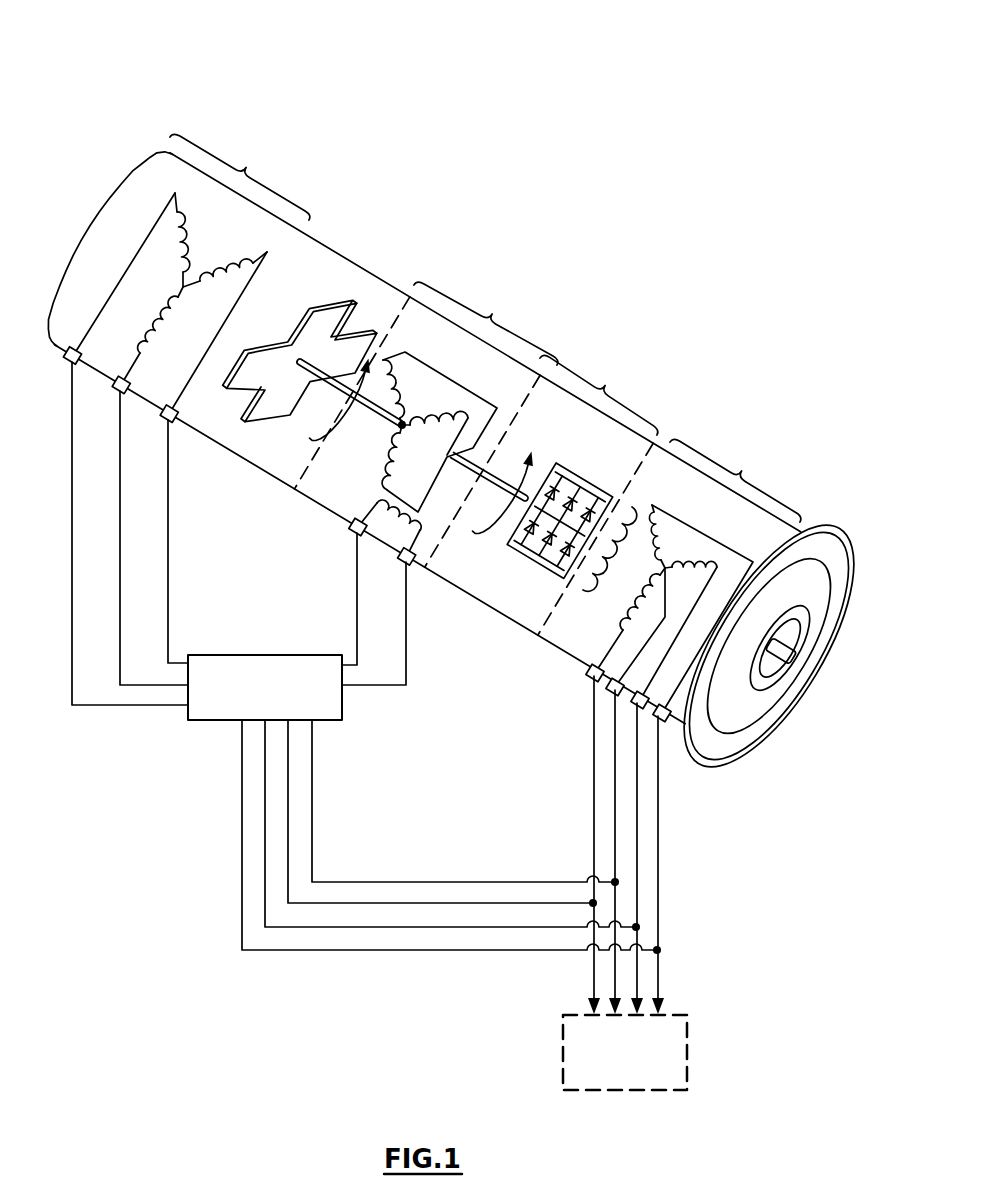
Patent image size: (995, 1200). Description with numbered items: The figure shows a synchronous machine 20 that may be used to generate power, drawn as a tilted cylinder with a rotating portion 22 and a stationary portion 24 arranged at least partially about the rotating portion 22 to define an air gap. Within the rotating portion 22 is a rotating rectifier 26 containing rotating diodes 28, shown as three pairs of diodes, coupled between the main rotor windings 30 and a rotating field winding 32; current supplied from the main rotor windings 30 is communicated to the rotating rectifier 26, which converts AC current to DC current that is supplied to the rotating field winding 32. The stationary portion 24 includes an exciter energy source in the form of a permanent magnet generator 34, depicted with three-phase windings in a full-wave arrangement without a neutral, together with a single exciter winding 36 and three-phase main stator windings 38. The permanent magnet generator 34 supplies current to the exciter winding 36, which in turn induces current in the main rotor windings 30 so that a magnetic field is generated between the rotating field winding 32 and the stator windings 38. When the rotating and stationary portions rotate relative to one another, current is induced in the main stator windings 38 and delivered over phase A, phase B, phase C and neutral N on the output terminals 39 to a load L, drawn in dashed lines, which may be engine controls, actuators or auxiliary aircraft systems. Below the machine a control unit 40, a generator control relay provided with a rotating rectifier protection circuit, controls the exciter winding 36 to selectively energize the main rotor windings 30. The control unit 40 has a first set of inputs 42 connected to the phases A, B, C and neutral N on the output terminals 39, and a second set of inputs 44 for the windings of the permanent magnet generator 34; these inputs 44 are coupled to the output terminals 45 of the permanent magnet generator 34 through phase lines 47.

The synchronous machine 20 is at (808, 690).
The rotating portion 22 is at (459, 206).
The stationary portion 24 is at (107, 78).
The rotating rectifier 26 is at (605, 385).
The rotating diodes 28 is at (557, 457).
The main rotor windings 30 is at (492, 314).
The rotating field winding 32 is at (598, 585).
The permanent magnet generator 34 is at (246, 167).
The exciter winding 36 is at (348, 530).
The main stator windings 38 is at (741, 471).
The output terminals 39 is at (658, 718).
The control unit 40 is at (342, 710).
The first set of inputs 42 is at (288, 725).
The second set of inputs 44 is at (187, 707).
The output terminals 45 is at (68, 366).
The phase lines 47 is at (118, 537).
The phase A is at (593, 760).
The neutral N is at (615, 790).
The phase B is at (636, 817).
The phase C is at (657, 845).
The load L is at (687, 1050).